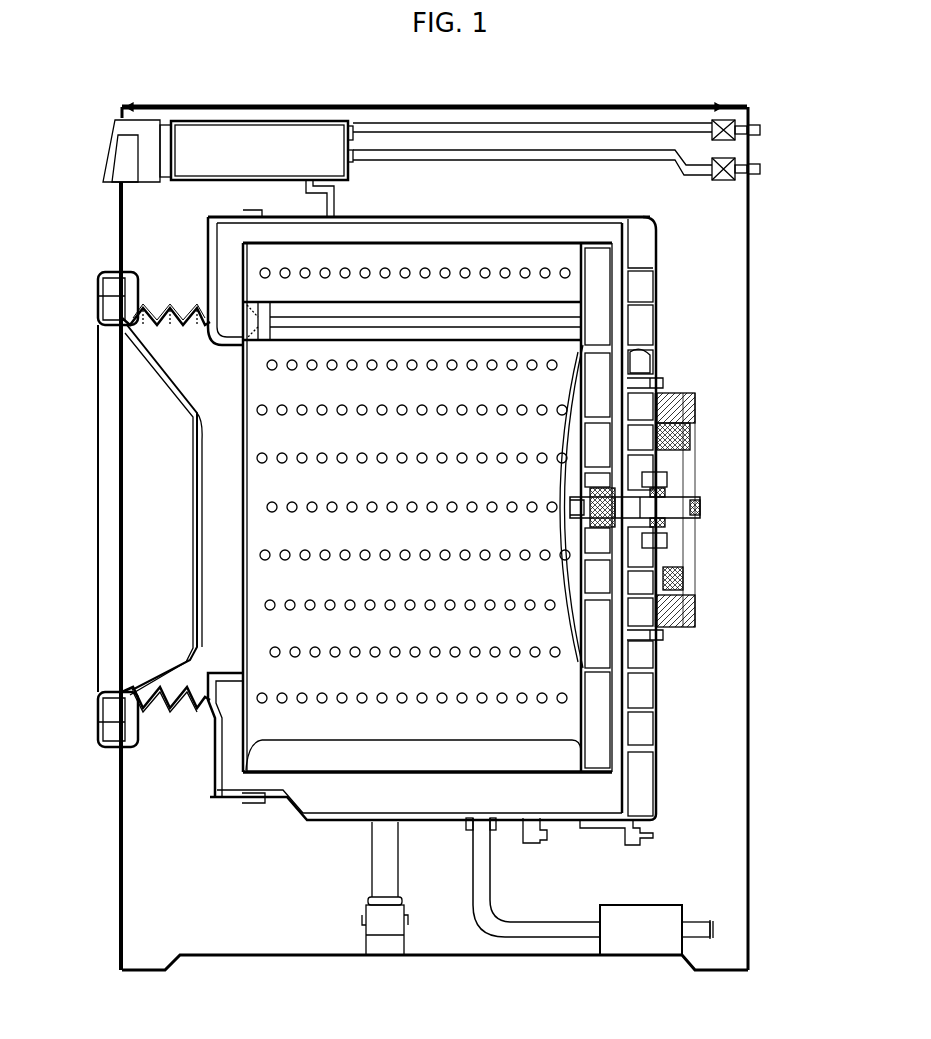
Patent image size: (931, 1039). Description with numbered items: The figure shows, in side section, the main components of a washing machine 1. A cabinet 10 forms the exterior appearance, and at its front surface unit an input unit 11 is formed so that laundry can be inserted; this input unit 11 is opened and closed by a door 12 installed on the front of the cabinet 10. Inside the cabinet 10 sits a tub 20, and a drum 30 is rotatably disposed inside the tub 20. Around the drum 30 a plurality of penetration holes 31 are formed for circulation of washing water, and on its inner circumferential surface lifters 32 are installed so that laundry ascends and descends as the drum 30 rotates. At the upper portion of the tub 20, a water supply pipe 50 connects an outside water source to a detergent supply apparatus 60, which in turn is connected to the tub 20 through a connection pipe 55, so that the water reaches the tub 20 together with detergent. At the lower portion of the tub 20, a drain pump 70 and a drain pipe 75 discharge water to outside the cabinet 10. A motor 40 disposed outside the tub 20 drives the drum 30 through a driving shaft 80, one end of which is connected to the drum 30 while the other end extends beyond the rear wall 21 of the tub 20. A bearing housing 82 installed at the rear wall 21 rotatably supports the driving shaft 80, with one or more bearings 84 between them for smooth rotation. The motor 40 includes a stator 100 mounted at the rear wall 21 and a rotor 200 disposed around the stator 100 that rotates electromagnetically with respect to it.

The washing machine 1 is at (437, 1010).
The cabinet 10 is at (750, 232).
The input unit 11 is at (171, 303).
The door 12 is at (97, 517).
The tub 20 is at (456, 511).
The rear wall 21 is at (632, 362).
The drum 30 is at (427, 491).
The penetration holes 31 is at (385, 461).
The lifters 32 is at (432, 740).
The motor 40 is at (712, 495).
The water supply pipe 50 is at (533, 122).
The connection pipe 55 is at (336, 191).
The detergent supply apparatus 60 is at (240, 121).
The drain pump 70 is at (641, 906).
The drain pipe 75 is at (490, 887).
The driving shaft 80 is at (680, 500).
The bearing housing 82 is at (665, 477).
The bearings 84 is at (655, 525).
The stator 100 is at (692, 400).
The rotor 200 is at (680, 438).